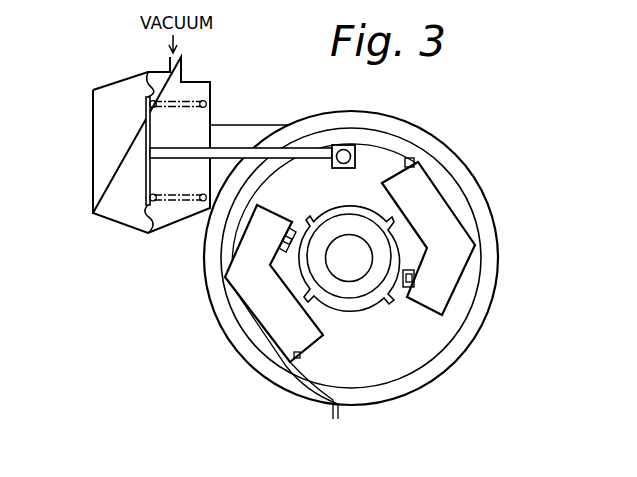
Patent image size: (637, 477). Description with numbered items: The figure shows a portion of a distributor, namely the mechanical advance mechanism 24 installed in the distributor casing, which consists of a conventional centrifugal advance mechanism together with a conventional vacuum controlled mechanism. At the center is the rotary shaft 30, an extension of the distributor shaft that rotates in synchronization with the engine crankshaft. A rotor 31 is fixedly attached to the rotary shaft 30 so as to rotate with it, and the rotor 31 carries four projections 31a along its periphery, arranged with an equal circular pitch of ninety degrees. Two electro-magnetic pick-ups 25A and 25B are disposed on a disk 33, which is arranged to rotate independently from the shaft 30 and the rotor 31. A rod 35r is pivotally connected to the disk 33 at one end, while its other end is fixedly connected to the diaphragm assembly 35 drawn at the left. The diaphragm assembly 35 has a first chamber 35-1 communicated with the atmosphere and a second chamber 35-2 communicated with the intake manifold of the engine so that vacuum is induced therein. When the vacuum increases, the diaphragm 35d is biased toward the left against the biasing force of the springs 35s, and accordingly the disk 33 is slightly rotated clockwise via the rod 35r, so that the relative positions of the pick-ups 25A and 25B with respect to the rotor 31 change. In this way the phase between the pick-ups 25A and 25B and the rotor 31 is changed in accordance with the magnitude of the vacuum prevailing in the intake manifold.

The mechanical advance mechanism 24 is at (516, 188).
The electro-magnetic pick-up 25A is at (272, 330).
The electro-magnetic pick-up 25B is at (452, 275).
The rotary shaft 30 is at (350, 272).
The rotor 31 is at (378, 302).
The projections 31a is at (388, 296).
The disk 33 is at (389, 376).
The diaphragm assembly 35 is at (93, 186).
The first chamber 35-1 is at (93, 121).
The second chamber 35-2 is at (204, 123).
The diaphragm 35d is at (146, 135).
The rod 35r is at (172, 158).
The springs 35s is at (177, 101).